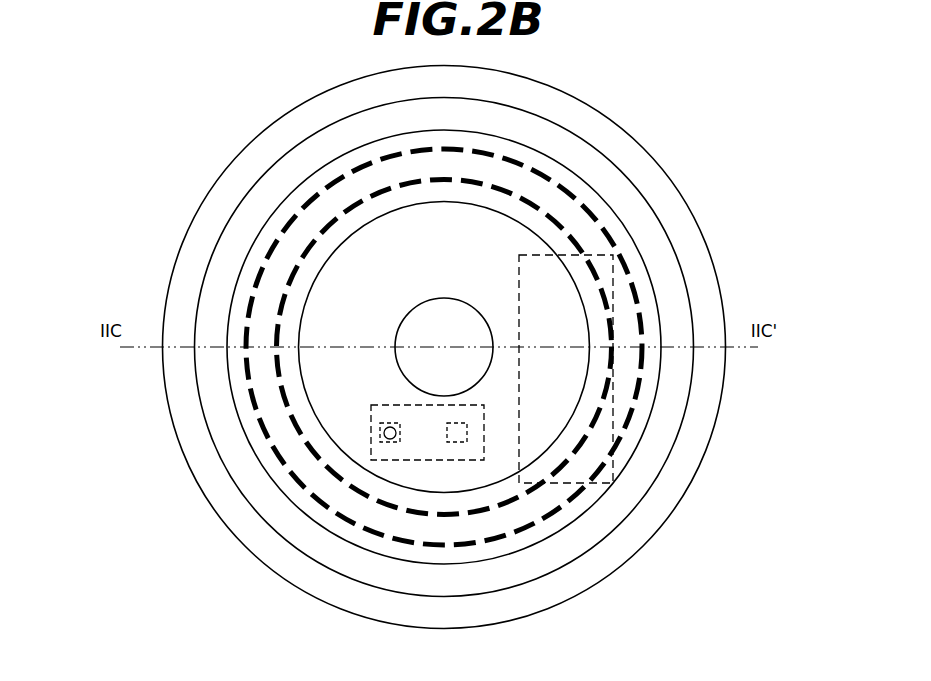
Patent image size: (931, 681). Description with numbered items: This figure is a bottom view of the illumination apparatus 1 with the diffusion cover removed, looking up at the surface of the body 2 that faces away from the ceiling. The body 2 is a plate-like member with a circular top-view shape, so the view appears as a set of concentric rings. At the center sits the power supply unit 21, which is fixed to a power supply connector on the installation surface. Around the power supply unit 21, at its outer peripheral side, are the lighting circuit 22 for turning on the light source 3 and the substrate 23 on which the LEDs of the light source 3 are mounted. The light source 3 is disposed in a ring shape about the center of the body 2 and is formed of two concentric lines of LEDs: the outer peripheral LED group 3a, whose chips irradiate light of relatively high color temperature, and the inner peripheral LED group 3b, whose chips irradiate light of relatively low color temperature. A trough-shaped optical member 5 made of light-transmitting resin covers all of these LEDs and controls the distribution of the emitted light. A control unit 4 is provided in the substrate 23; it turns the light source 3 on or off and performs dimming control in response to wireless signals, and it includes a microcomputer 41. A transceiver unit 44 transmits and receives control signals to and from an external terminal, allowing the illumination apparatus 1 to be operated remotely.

The illumination apparatus 1 is at (108, 115).
The body 2 is at (697, 432).
The light source 3 is at (527, 318).
The outer peripheral LED group 3a is at (562, 173).
The inner peripheral LED group 3b is at (557, 217).
The control unit 4 is at (377, 417).
The optical member 5 is at (653, 365).
The power supply unit 21 is at (475, 325).
The lighting circuit 22 is at (540, 422).
The substrate 23 is at (493, 172).
The microcomputer 41 is at (463, 438).
The transceiver unit 44 is at (383, 432).